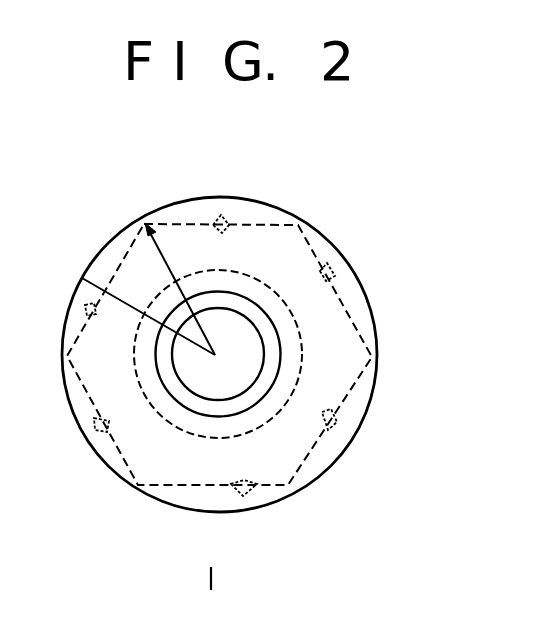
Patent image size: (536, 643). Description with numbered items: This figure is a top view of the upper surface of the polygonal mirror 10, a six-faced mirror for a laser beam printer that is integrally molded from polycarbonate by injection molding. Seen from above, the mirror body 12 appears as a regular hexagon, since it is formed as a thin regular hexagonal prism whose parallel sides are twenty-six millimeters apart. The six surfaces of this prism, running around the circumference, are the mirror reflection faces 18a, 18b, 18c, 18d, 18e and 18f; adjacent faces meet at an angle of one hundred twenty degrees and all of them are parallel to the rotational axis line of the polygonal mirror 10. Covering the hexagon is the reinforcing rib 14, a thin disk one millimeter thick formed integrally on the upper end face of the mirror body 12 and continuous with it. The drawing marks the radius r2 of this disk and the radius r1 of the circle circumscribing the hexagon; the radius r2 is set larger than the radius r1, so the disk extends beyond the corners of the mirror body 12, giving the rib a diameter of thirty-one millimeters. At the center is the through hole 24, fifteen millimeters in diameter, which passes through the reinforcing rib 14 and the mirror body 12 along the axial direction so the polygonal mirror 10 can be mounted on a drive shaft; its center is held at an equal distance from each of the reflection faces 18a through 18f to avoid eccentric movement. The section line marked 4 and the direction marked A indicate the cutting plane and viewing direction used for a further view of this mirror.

The polygonal mirror 10 is at (312, 216).
The mirror body 12 is at (334, 322).
The reinforcing rib 14 is at (344, 441).
The reflection face 18a is at (109, 426).
The reflection face 18b is at (256, 473).
The reflection face 18c is at (326, 411).
The reflection face 18d is at (326, 281).
The reflection face 18e is at (223, 233).
The reflection face 18f is at (93, 313).
The through hole 24 is at (210, 399).
The section line 4- 4 is at (187, 352).
The radius of the circumscribed circle r1 is at (180, 289).
The radius of the reinforcing rib r2 is at (148, 313).
The axis A is at (211, 597).